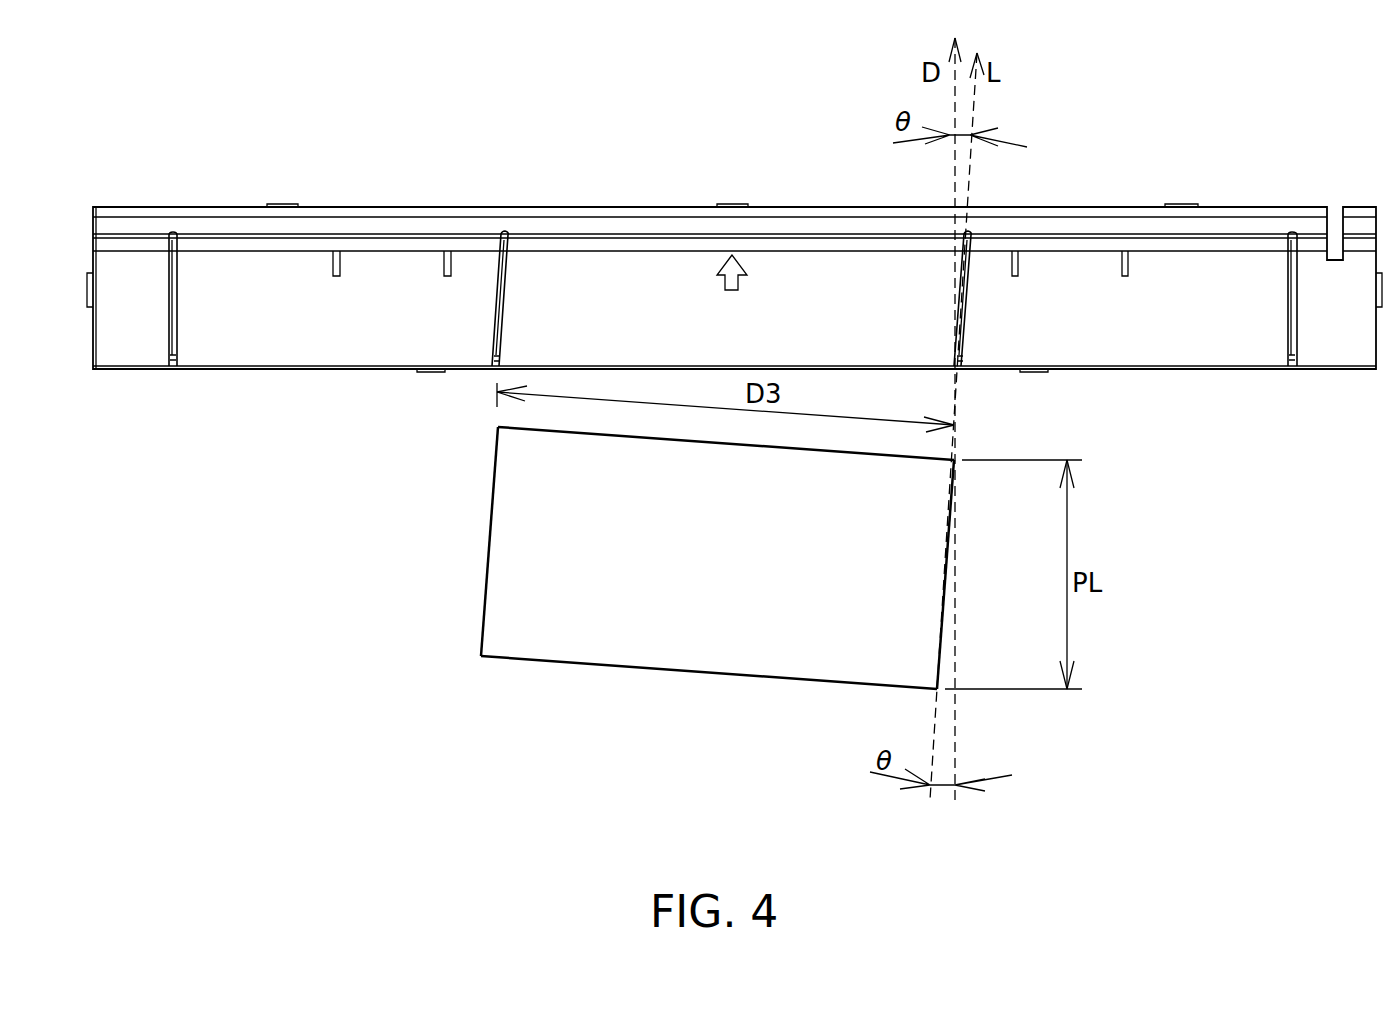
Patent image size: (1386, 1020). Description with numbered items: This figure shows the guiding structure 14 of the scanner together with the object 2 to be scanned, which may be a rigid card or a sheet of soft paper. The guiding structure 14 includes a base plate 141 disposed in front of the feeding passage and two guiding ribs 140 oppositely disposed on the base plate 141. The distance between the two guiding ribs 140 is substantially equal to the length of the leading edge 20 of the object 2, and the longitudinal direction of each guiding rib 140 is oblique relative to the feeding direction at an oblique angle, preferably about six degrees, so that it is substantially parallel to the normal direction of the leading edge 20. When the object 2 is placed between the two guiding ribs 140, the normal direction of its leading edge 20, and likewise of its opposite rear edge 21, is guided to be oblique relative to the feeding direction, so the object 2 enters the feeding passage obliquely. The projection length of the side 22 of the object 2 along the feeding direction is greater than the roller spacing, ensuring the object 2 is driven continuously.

The guiding structure 14 is at (1145, 108).
The base plate 141 is at (640, 275).
The guiding ribs 140 is at (500, 295).
The object 2 is at (722, 573).
The leading edge 20 is at (918, 456).
The rear edge 21 is at (707, 677).
The side 22 is at (945, 615).